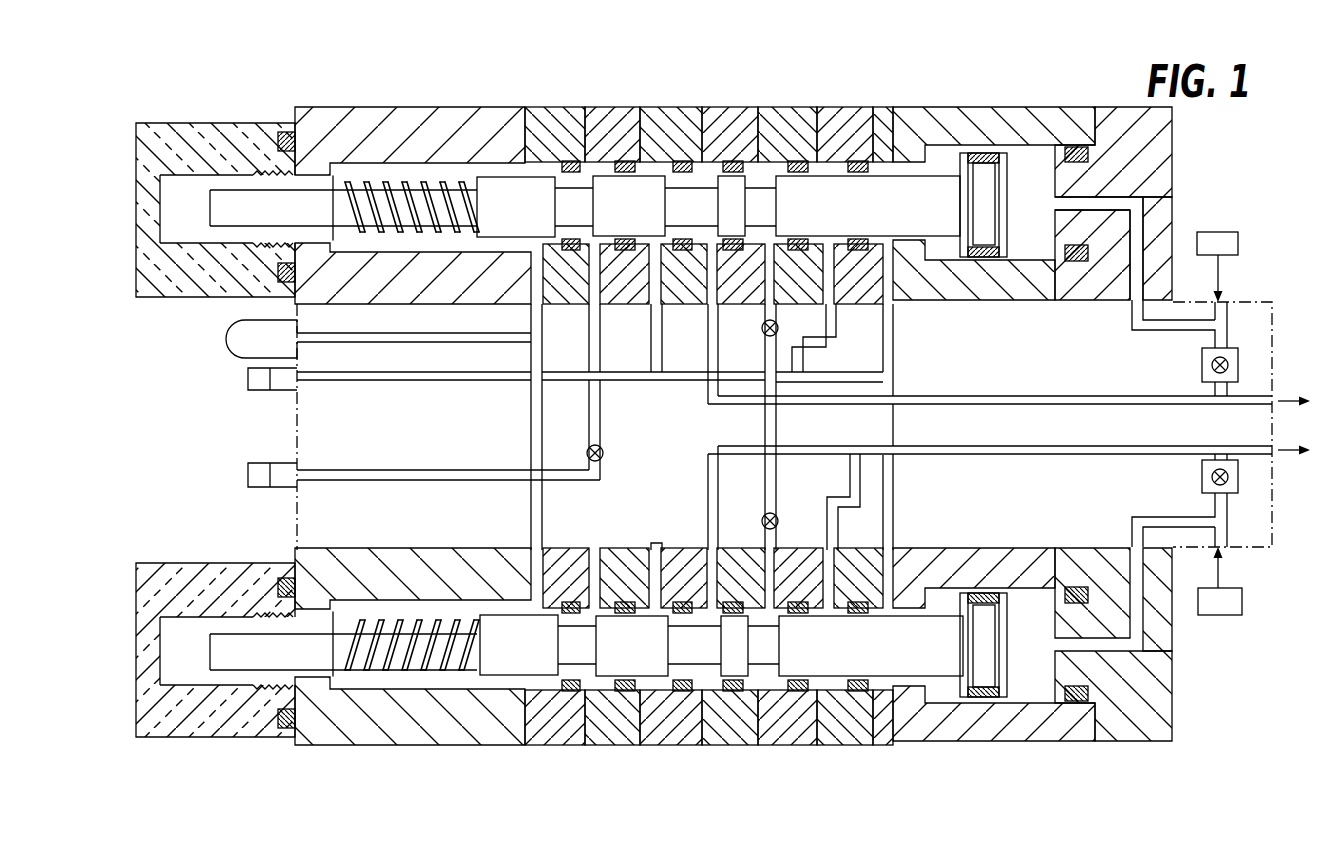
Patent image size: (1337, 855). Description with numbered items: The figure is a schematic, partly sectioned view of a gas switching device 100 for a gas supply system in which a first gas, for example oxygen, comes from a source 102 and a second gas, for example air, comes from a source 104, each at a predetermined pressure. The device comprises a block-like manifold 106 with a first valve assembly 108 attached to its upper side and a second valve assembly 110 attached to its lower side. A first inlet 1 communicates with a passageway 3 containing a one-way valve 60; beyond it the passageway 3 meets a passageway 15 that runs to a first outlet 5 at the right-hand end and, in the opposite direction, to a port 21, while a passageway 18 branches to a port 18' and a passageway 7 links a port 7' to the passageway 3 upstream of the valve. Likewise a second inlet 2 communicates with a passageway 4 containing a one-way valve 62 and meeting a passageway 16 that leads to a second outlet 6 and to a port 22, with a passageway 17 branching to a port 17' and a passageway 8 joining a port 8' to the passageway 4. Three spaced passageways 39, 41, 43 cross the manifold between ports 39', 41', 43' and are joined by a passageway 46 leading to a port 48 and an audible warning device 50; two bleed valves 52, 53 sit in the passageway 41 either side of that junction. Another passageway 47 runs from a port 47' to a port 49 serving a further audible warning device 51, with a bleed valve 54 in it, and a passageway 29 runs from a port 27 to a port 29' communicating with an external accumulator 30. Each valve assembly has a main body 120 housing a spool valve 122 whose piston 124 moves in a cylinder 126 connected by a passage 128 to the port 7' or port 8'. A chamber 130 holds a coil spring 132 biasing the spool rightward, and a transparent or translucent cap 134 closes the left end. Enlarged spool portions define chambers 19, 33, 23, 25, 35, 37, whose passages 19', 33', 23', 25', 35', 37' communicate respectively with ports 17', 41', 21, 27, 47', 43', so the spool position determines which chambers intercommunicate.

The first inlet 1 is at (1224, 300).
The second inlet 2 is at (1224, 553).
The passageway 3 is at (1228, 392).
The passageway 4 is at (1223, 510).
The first outlet 5 is at (1283, 398).
The second outlet 6 is at (1283, 448).
The passageway 7 is at (1173, 330).
The port 7' is at (1099, 269).
The passageway 8 is at (1173, 518).
The port 8' is at (1113, 528).
The passageway 15 is at (985, 396).
The passageway 16 is at (985, 446).
The passageway 17 is at (829, 363).
The port 17' is at (835, 338).
The passageway 18 is at (875, 502).
The port 18' is at (863, 531).
The chamber 19 is at (846, 426).
The passage 19' is at (878, 423).
The port 21 is at (708, 340).
The port 22 is at (710, 545).
The chamber 23 is at (731, 376).
The passage 23' is at (704, 427).
The chamber 25 is at (630, 426).
The passage 25' is at (689, 426).
The port 27 is at (663, 373).
The passageway 29 is at (414, 326).
The port 29' is at (325, 322).
The accumulator 30 is at (232, 340).
The chamber 33 is at (854, 426).
The passage 33' is at (819, 373).
The chamber 35 is at (592, 426).
The passage 35' is at (621, 377).
The chamber 37 is at (517, 426).
The passage 37' is at (501, 380).
The passageway 39 is at (912, 427).
The ports 39' is at (919, 427).
The passageway 41 is at (753, 427).
The ports 41' is at (736, 426).
The passageway 43 is at (559, 360).
The ports 43' is at (541, 427).
The passageway 46 is at (405, 372).
The passageway 47 is at (653, 389).
The port 47' is at (622, 338).
The port 48 is at (300, 386).
The port 49 is at (300, 470).
The audible warning device 50 is at (272, 390).
The audible warning device 51 is at (270, 472).
The bleed valve 52 is at (778, 326).
The bleed valve 53 is at (776, 516).
The bleed valve 54 is at (604, 452).
The one-way valve 60 is at (1228, 362).
The one-way valve 62 is at (1205, 470).
The gas switching device 100 is at (1200, 148).
The source 102 is at (1238, 232).
The source 104 is at (1236, 615).
The manifold 106 is at (1272, 298).
The first valve assembly 108 is at (956, 98).
The second valve assembly 110 is at (830, 757).
The main body 120 is at (682, 135).
The spool valve 122 is at (880, 190).
The piston 124 is at (998, 158).
The cylinder 126 is at (1040, 160).
The passage 128 is at (1150, 220).
The chamber 130 is at (472, 172).
The coil spring 132 is at (425, 182).
The cap 134 is at (232, 123).